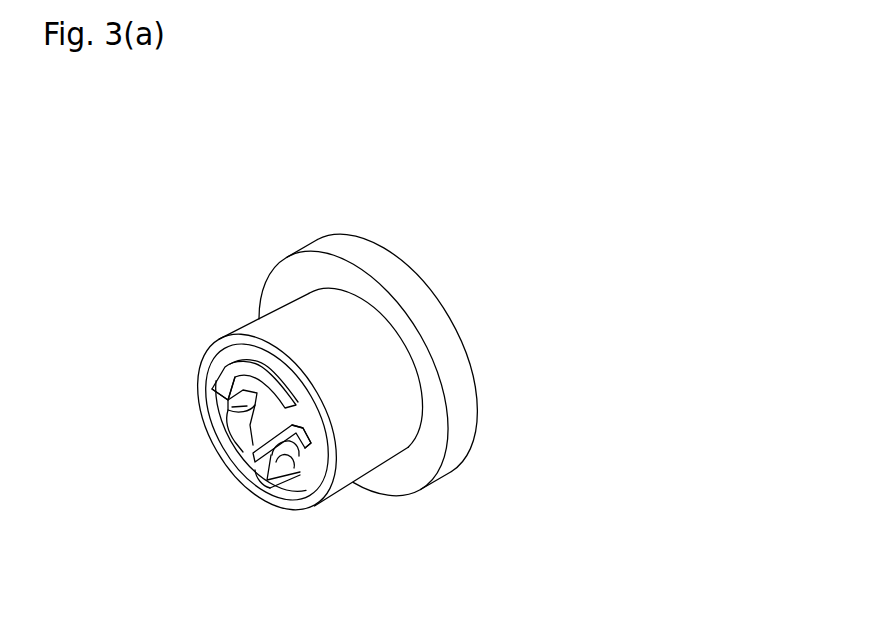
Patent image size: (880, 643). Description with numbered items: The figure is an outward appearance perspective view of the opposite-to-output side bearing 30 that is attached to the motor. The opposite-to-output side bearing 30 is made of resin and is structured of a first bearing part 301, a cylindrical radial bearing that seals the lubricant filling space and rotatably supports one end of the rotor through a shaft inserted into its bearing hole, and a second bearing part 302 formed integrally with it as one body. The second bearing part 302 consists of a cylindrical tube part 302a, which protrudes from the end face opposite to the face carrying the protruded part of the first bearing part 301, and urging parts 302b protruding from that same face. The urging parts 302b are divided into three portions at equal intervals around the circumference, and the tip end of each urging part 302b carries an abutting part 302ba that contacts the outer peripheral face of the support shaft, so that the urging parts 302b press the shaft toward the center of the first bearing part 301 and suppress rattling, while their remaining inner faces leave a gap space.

The opposite-to-output side bearing 30 is at (182, 203).
The first bearing part 301 is at (394, 249).
The second bearing part 302 is at (240, 323).
The cylindrical tube part 302a is at (205, 418).
The urging parts 302b is at (253, 455).
The abutting part 302ba is at (217, 393).